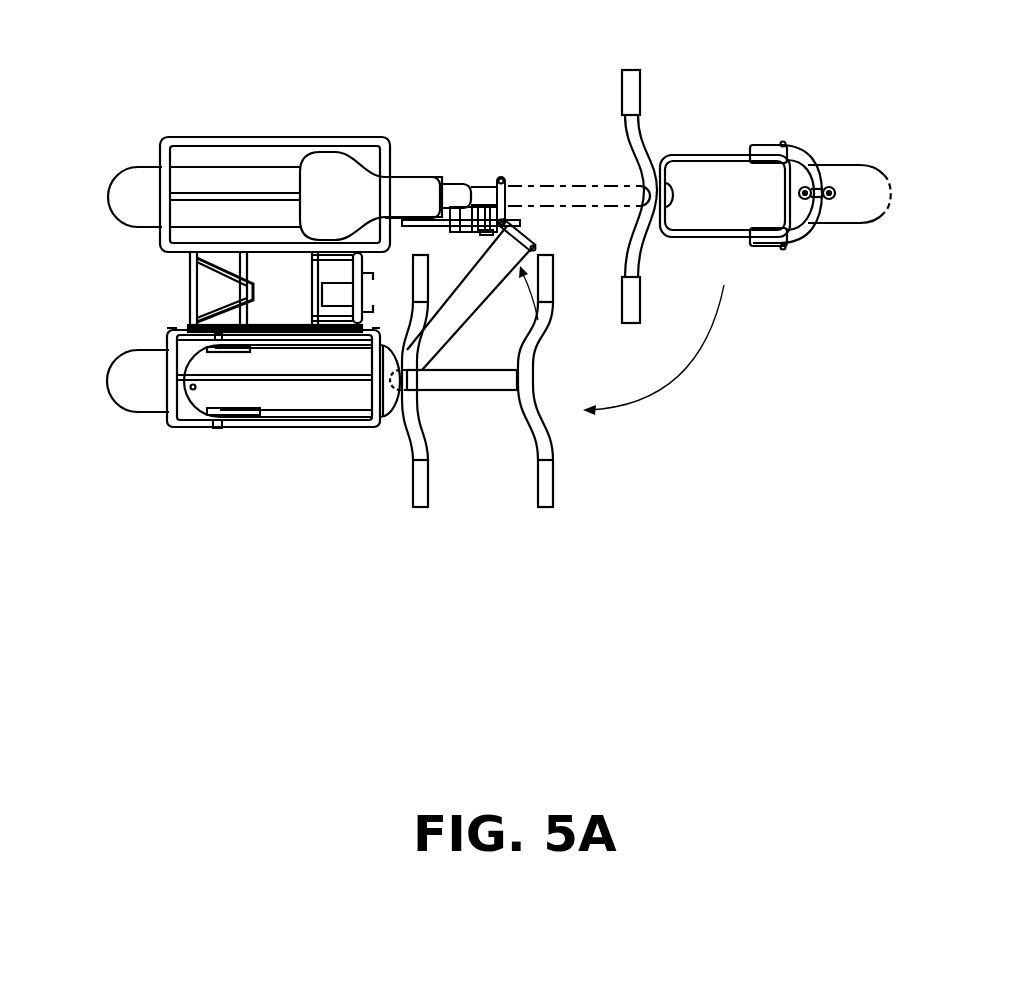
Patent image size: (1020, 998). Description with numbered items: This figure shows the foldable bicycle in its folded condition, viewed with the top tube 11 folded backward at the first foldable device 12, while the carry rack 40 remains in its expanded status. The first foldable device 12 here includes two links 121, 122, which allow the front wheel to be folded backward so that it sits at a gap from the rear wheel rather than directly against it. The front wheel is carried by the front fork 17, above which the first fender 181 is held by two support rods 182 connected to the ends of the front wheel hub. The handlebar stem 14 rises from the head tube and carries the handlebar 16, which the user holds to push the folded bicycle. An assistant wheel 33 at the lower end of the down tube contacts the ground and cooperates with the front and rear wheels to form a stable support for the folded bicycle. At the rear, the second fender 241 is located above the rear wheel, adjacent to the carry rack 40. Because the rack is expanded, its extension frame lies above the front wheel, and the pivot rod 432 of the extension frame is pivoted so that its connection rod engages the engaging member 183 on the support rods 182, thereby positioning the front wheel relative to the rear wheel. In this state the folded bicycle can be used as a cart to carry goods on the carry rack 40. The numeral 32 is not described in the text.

The carry rack 40 is at (226, 122).
The second fender 241 is at (135, 190).
The top tube 11 is at (440, 330).
The link 121 is at (506, 182).
The link 122 is at (540, 248).
The first foldable device 12 is at (537, 330).
The seat tube 32 is at (475, 212).
The assistant wheel 33 is at (484, 236).
The handlebar stem 14 is at (425, 385).
The handlebar 16 is at (540, 417).
The front fork 17 is at (300, 347).
The first fender 181 is at (128, 378).
The support rods 182 is at (193, 428).
The engaging member 183 is at (217, 430).
The pivot rod 432 is at (222, 430).